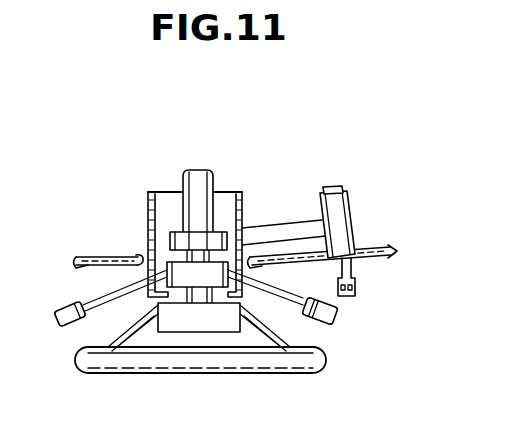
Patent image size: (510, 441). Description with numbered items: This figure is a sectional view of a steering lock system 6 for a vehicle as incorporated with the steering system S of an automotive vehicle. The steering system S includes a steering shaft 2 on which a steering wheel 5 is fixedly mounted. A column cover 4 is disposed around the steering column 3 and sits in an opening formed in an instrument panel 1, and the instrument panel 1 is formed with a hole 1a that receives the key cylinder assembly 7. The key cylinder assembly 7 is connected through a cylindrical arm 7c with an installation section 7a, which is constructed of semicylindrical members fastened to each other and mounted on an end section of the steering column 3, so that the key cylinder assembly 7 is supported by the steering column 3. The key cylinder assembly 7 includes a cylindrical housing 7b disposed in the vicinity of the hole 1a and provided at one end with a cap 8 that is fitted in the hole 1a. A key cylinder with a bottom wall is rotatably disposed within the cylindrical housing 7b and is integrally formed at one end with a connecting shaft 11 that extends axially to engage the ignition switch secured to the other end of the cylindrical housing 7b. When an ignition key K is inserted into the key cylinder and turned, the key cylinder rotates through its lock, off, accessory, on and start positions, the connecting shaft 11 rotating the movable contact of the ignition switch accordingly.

The steering system S is at (156, 166).
The instrument panel 1 is at (85, 256).
The hole 1a is at (363, 248).
The steering shaft 2 is at (200, 294).
The steering column 3 is at (205, 171).
The column cover 4 is at (242, 212).
The steering wheel 5 is at (223, 363).
The steering lock system 6 is at (267, 206).
The key cylinder assembly 7 is at (318, 192).
The installation section 7a is at (170, 243).
The cylindrical housing 7b is at (347, 217).
The cylindrical arm 7c is at (288, 229).
The cap 8 is at (356, 264).
The connecting shaft 11 is at (333, 186).
The ignition key K is at (348, 297).